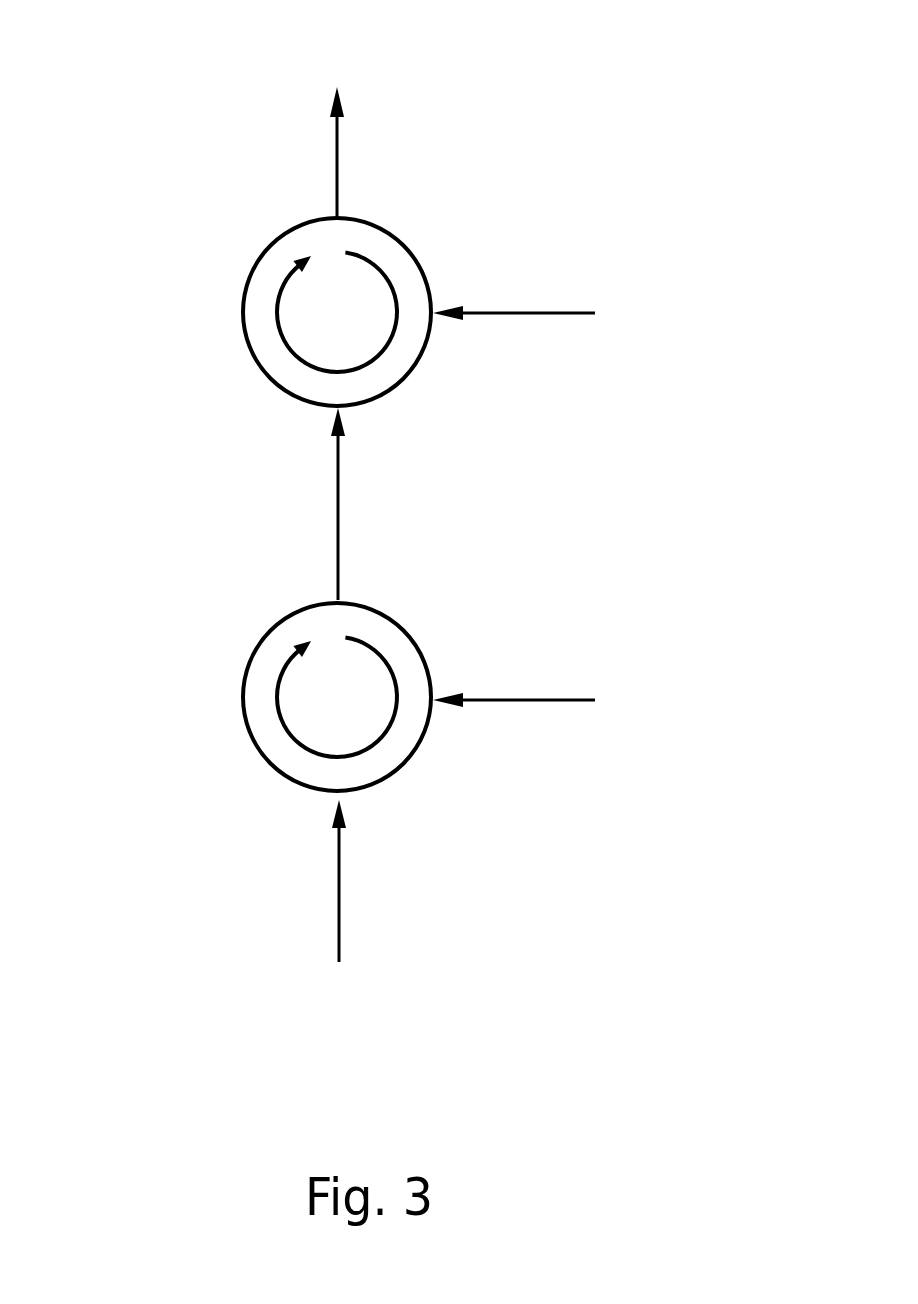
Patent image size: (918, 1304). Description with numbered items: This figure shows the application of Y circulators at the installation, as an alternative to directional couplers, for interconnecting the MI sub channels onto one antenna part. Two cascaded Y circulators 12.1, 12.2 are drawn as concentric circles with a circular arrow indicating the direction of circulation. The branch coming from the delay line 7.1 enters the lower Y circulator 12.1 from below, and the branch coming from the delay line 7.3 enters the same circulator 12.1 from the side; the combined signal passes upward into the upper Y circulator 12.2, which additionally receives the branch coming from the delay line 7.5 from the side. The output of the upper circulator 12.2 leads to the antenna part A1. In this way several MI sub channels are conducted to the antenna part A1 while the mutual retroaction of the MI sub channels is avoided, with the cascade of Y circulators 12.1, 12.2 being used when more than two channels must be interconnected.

The combining unit 12.1 is at (233, 682).
The combining unit 12.2 is at (232, 292).
The delay line 7.1 is at (335, 931).
The delay line 7.3 is at (617, 691).
The delay line 7.5 is at (617, 306).
The antenna part A1 is at (346, 109).